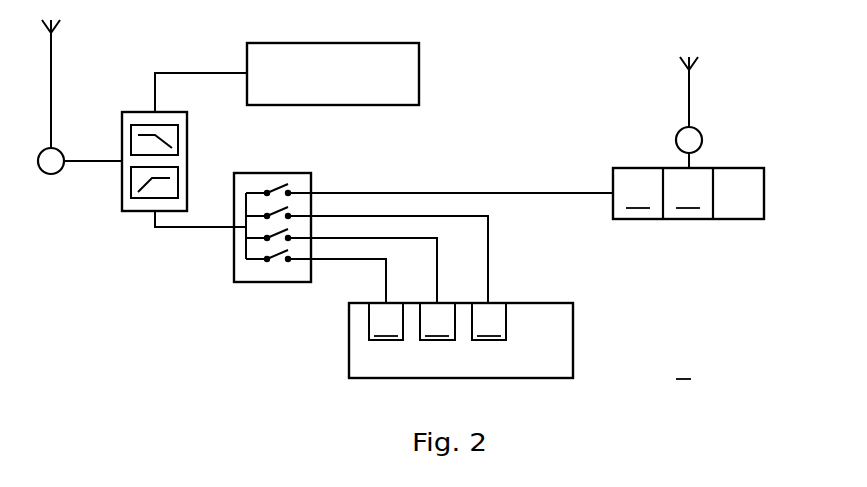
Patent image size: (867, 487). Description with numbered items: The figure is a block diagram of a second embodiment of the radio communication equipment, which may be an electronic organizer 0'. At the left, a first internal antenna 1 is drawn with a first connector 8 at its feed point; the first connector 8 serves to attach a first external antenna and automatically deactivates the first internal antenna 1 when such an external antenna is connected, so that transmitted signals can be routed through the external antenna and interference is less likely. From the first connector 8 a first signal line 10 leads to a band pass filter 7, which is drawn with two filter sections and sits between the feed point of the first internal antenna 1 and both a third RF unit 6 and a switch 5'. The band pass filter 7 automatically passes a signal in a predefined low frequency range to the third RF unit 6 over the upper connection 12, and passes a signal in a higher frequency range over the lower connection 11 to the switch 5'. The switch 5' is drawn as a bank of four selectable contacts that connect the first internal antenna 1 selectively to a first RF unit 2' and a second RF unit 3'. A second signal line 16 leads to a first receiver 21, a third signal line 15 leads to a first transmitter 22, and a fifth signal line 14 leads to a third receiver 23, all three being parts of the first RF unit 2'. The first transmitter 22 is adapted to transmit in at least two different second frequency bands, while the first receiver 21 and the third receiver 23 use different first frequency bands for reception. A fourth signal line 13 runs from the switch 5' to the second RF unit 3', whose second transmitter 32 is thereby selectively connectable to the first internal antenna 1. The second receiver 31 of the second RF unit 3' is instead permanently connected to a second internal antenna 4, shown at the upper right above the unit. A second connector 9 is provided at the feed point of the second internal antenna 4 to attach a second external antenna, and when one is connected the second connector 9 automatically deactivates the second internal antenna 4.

The first internal antenna 1 is at (51, 54).
The first connector 8 is at (51, 175).
The first signal line 10 is at (87, 161).
The band pass filter 7 is at (187, 150).
The connection line 12 is at (197, 73).
The third RF unit 6 is at (419, 68).
The connection line 11 is at (190, 227).
The switch 5' is at (272, 258).
The fourth signal line 13 is at (497, 193).
The fifth signal line 14 is at (488, 248).
The third signal line 15 is at (437, 270).
The second signal line 16 is at (386, 276).
The first RF unit 2' is at (488, 340).
The first receiver 21 is at (386, 321).
The first transmitter 22 is at (437, 321).
The third receiver 23 is at (489, 321).
The second RF unit 3' is at (715, 193).
The second receiver 31 is at (688, 196).
The second transmitter 32 is at (638, 196).
The second internal antenna 4 is at (689, 90).
The second connector 9 is at (702, 140).
The electronic organizer 0' is at (687, 366).